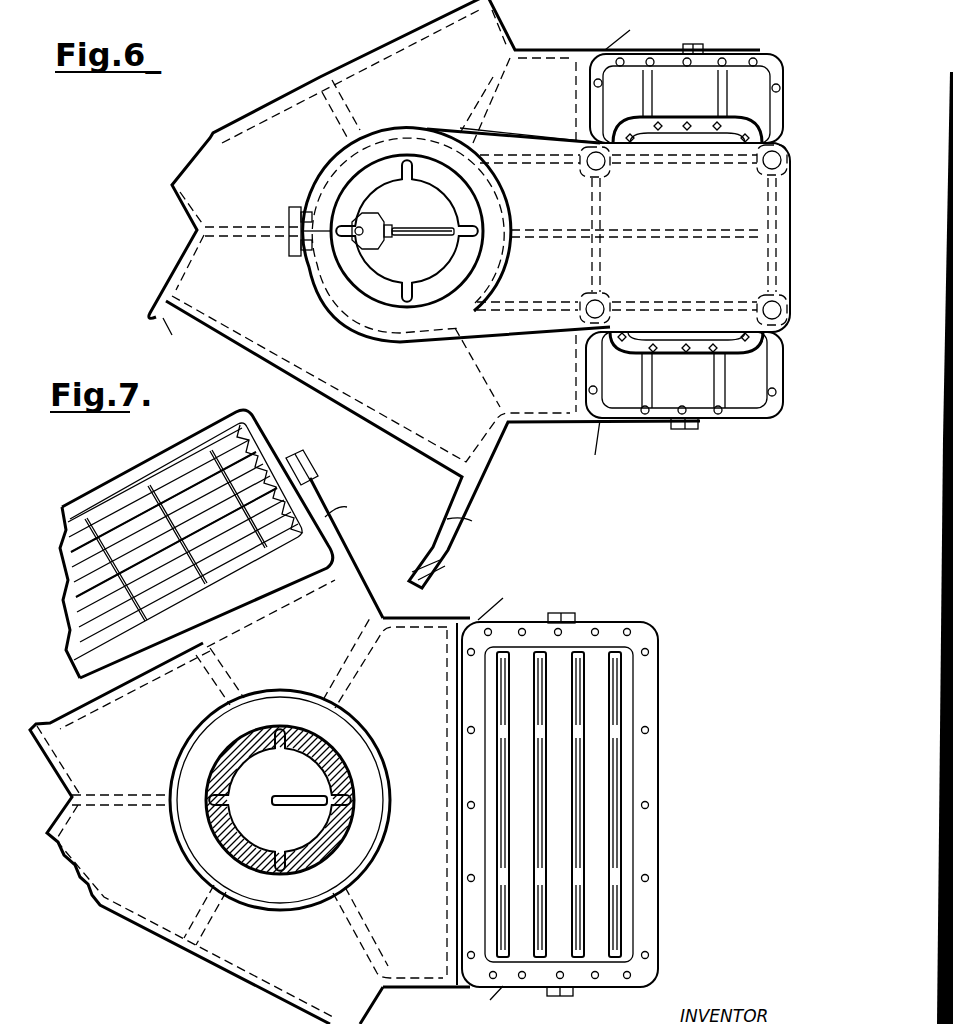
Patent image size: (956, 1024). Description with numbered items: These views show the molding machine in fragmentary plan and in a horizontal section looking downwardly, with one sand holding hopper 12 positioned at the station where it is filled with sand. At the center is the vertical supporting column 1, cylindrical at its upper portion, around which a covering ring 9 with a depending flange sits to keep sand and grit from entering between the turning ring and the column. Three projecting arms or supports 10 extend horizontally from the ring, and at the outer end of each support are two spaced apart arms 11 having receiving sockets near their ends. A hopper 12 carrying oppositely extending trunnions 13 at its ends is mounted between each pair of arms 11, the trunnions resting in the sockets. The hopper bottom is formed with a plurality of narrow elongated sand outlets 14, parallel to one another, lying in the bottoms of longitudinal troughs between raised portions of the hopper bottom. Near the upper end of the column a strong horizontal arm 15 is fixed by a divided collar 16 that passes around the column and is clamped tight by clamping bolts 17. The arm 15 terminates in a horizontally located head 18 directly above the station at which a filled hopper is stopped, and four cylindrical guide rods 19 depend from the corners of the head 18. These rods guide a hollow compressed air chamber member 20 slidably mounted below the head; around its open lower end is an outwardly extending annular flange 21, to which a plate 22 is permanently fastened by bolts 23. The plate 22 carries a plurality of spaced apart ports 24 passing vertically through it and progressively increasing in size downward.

In FIG. 6, the vertical supporting column 1 is at (470, 226).
In FIG. 7, the vertical supporting column 1 is at (330, 752).
In FIG. 7, the covering ring 9 is at (372, 777).
In FIG. 6, the projecting arms or supports 10 is at (381, 66).
In FIG. 7, the projecting arms or supports 10 is at (413, 943).
In FIG. 6, the arms 11 is at (408, 273).
In FIG. 7, the arms 11 is at (426, 756).
In FIG. 7, the sand holding hopper 12 is at (115, 485).
In FIG. 6, the trunnions 13 is at (692, 44).
In FIG. 7, the trunnions 13 is at (560, 613).
In FIG. 7, the sand outlets 14 is at (222, 488).
In FIG. 6, the horizontal arm 15 is at (515, 320).
In FIG. 6, the divided collar 16 is at (337, 300).
In FIG. 6, the clamping bolts 17 is at (298, 258).
In FIG. 6, the head 18 is at (760, 216).
In FIG. 6, the guide rods 19 is at (774, 158).
In FIG. 6, the compressed air chamber member 20 is at (648, 334).
In FIG. 6, the annular flange 21 is at (768, 68).
In FIG. 7, the plate 22 is at (637, 788).
In FIG. 6, the bolts 23 is at (716, 66).
In FIG. 7, the ports 24 is at (612, 910).